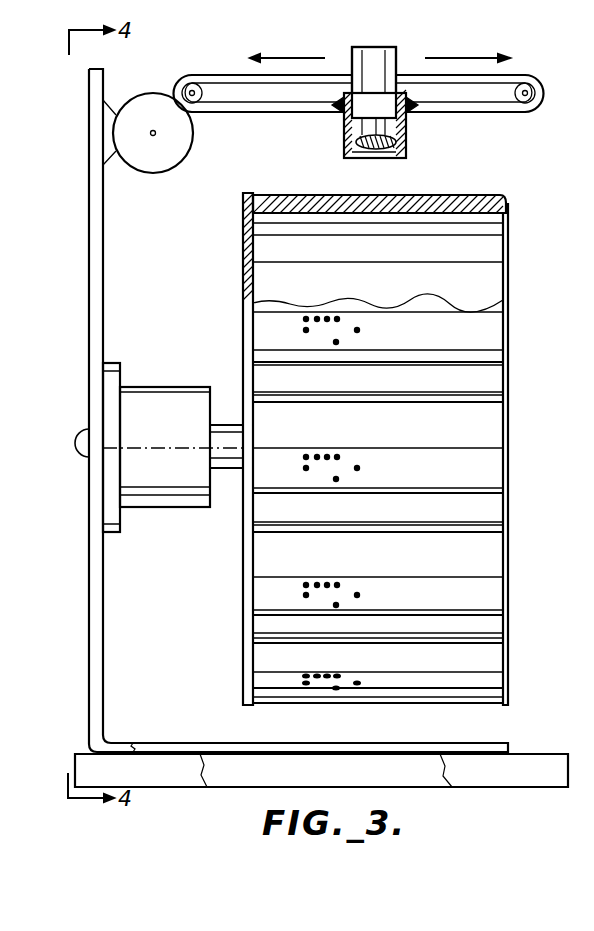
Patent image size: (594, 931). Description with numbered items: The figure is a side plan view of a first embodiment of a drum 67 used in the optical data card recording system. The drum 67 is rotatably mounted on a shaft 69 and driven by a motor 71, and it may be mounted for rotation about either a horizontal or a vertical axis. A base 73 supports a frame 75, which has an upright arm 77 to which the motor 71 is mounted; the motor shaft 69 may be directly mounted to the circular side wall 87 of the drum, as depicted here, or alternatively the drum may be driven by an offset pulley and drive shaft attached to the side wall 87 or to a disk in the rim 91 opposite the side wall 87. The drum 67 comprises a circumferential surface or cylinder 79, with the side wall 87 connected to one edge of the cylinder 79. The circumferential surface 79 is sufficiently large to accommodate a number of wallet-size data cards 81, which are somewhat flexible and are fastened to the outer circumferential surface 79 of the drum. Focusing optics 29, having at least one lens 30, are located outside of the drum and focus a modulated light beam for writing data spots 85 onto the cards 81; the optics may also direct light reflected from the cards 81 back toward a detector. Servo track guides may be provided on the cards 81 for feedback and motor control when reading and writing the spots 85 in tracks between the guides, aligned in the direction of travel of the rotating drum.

The focusing optics 29 is at (406, 131).
The lens 30 is at (386, 150).
The drum 67 is at (204, 655).
The shaft 69 is at (229, 425).
The motor 71 is at (172, 387).
The base 73 is at (518, 766).
The frame 75 is at (163, 750).
The upright arm 77 is at (95, 563).
The circumferential surface 79 is at (488, 219).
The data cards 81 is at (478, 333).
The data spots 85 is at (352, 316).
The side wall 87 is at (247, 241).
The rim 91 is at (508, 259).